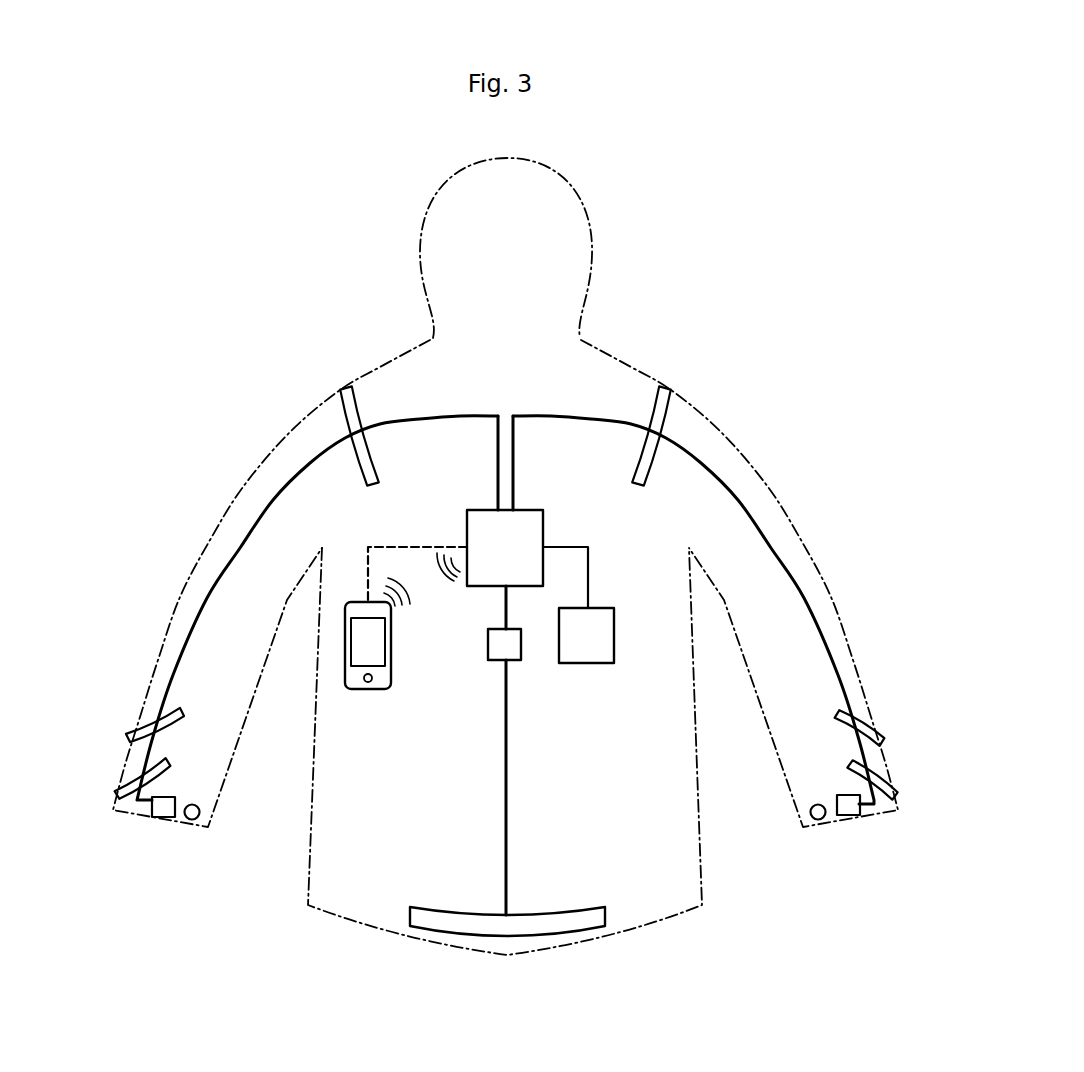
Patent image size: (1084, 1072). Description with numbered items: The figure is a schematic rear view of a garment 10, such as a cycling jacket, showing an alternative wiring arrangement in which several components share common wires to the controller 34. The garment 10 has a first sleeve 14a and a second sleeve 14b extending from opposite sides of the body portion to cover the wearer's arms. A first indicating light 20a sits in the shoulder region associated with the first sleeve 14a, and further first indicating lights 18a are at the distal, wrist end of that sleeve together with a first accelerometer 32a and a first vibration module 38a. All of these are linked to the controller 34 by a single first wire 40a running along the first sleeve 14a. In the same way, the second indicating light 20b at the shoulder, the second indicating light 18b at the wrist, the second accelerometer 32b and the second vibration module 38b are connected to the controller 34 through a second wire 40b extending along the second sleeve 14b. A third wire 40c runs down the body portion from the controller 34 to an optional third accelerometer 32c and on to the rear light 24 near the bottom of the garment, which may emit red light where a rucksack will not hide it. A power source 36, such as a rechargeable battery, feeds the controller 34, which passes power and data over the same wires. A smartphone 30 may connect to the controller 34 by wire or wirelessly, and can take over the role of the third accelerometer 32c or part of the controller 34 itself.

The garment 10 is at (245, 410).
The first sleeve 14a is at (200, 565).
The second sleeve 14b is at (817, 572).
The first indicating lights 18a is at (128, 758).
The second indicating light 18b is at (882, 773).
The first indicating light 20a is at (360, 410).
The second indicating light 20b is at (652, 407).
The rear light 24 is at (537, 927).
The smartphone 30 is at (380, 689).
The first accelerometer 32a is at (160, 820).
The second accelerometer 32b is at (853, 817).
The third accelerometer 32c is at (497, 647).
The controller 34 is at (485, 525).
The power source 36 is at (595, 663).
The first vibration module 38a is at (192, 822).
The second vibration module 38b is at (817, 821).
The first wire 40a is at (268, 503).
The second wire 40b is at (747, 508).
The third wire 40c is at (505, 823).